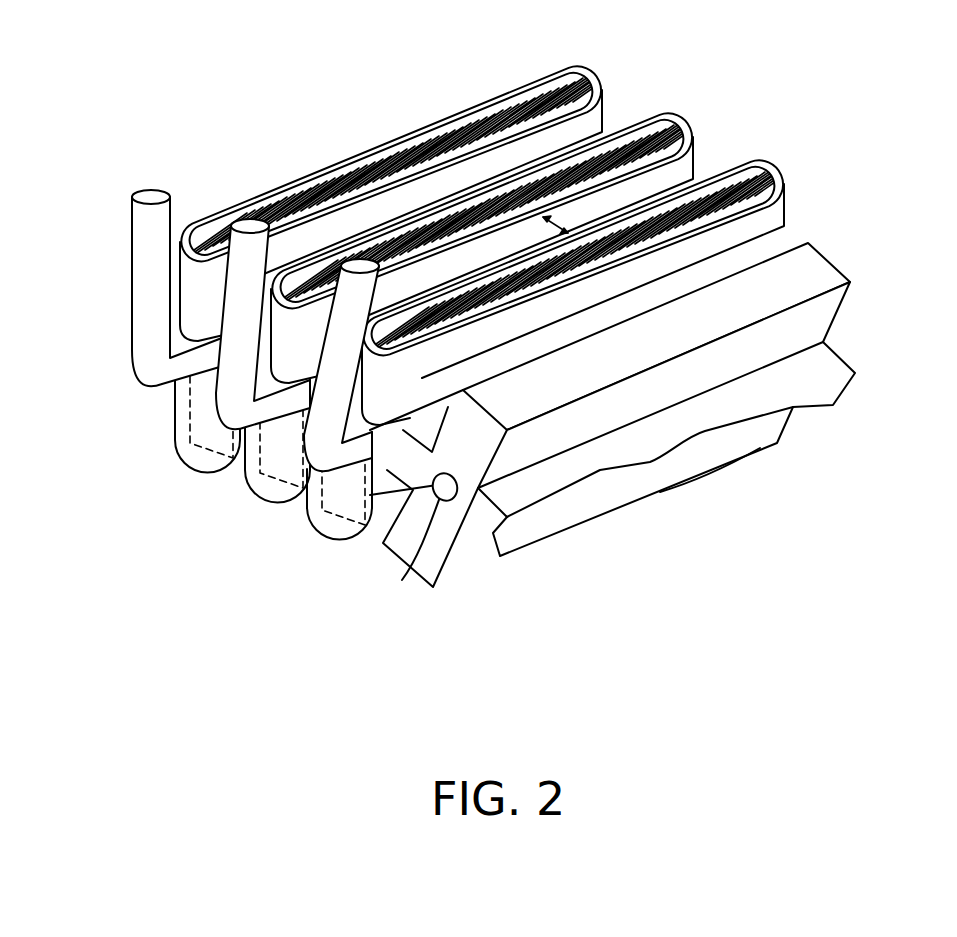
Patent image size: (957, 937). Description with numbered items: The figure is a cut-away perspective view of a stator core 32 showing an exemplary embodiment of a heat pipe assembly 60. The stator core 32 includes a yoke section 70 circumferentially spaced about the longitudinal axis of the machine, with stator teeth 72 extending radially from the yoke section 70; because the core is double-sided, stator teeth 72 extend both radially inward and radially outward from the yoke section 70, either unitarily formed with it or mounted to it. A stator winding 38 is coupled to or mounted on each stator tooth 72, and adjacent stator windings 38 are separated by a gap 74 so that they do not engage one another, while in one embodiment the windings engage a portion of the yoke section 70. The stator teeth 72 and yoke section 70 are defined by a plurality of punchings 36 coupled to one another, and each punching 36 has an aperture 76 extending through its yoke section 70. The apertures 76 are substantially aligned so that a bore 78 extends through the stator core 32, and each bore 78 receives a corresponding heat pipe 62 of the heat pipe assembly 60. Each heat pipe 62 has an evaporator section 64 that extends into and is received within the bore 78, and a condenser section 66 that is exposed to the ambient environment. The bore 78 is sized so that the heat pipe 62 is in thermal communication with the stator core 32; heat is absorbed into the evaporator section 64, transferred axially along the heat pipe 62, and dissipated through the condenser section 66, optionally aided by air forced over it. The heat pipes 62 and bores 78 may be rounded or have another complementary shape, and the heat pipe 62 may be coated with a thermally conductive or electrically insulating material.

The stator core 32 is at (459, 328).
The punching 36 is at (742, 203).
The stator winding 38 is at (748, 168).
The gap 74 is at (695, 150).
The heat pipe assembly 60 is at (200, 333).
The condenser section 66 is at (147, 300).
The evaporator section 64 is at (172, 368).
The heat pipe 62 is at (185, 418).
The stator teeth 72 is at (790, 275).
The yoke section 70 is at (470, 553).
The aperture 76 is at (405, 565).
The bore 78 is at (345, 527).